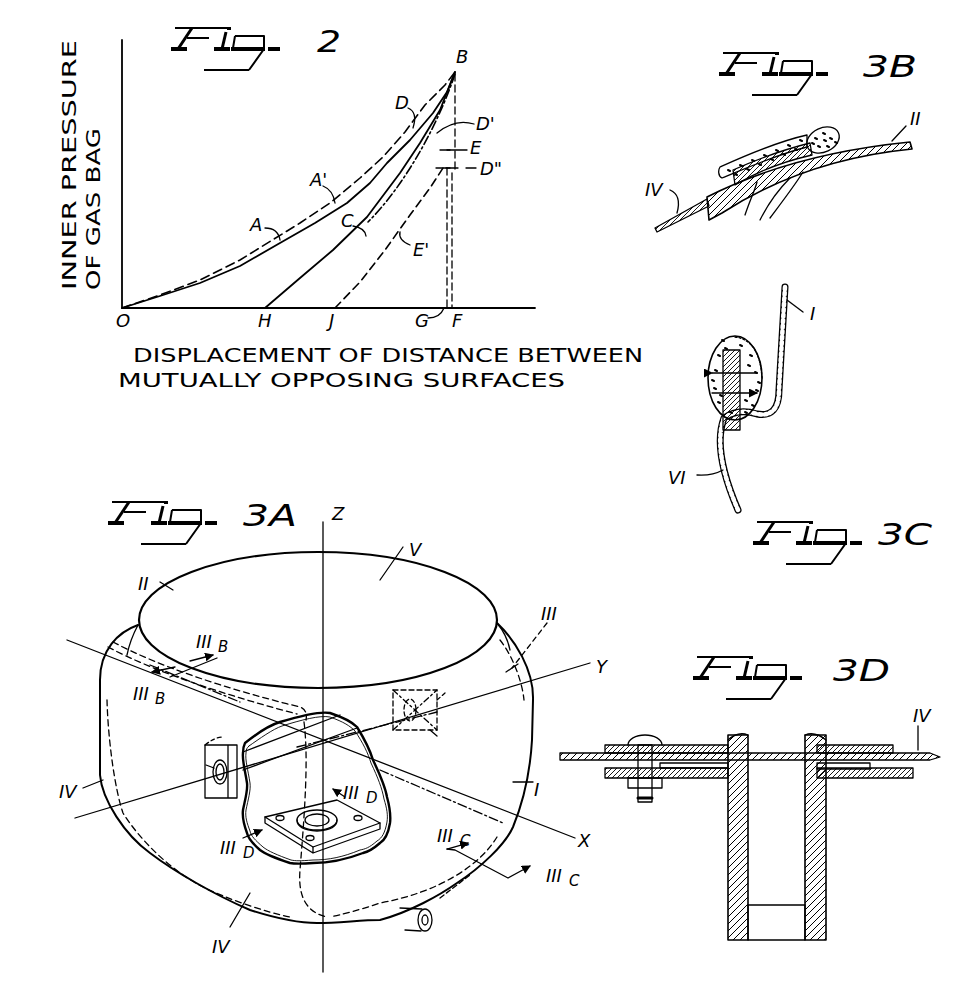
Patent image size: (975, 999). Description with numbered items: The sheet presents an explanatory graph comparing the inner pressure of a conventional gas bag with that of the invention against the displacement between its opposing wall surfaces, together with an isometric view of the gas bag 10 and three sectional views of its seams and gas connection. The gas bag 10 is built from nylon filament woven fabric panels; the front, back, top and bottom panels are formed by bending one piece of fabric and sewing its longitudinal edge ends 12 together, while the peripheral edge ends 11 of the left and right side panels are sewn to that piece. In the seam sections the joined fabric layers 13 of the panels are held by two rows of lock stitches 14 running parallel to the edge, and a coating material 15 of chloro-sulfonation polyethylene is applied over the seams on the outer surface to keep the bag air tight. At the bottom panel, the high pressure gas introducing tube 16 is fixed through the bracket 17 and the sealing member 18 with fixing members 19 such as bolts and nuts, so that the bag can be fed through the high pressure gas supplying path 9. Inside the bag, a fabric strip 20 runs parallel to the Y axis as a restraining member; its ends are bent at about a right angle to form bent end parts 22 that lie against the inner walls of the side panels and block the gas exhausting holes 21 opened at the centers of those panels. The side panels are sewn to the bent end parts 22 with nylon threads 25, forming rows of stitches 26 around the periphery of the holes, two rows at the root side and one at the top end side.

In FIG. 3A, the high pressure gas supplying path 9 is at (413, 923).
In FIG. 3D, the high pressure gas supplying path 9 is at (727, 913).
In FIG. 3A, the gas bag 10 is at (222, 575).
In FIG. 3A, the peripheral edge ends 11 is at (243, 681).
In FIG. 3B, the peripheral edge ends 11 is at (842, 160).
In FIG. 3A, the edge ends 12 is at (467, 886).
In FIG. 3C, the edge ends 12 is at (740, 435).
In FIG. 3B, the reinforcing fabric layer 13 is at (810, 133).
In FIG. 3C, the reinforcing fabric layer 13 is at (733, 342).
In FIG. 3B, the lock stitches 14 is at (753, 200).
In FIG. 3C, the lock stitches 14 is at (713, 400).
In FIG. 3B, the coating material 15 is at (825, 133).
In FIG. 3C, the coating material 15 is at (743, 342).
In FIG. 3A, the high pressure gas introducing tube 16 is at (347, 833).
In FIG. 3D, the high pressure gas introducing tube 16 is at (767, 747).
In FIG. 3D, the bracket 17 is at (688, 747).
In FIG. 3D, the sealing member 18 is at (607, 770).
In FIG. 3D, the fixing members 19 is at (645, 738).
In FIG. 3A, the strip 20 is at (284, 733).
In FIG. 3A, the gas exhausting holes 21 is at (237, 805).
In FIG. 3A, the bent end parts 22 is at (223, 745).
In FIG. 3A, the nylon threads 25 is at (207, 800).
In FIG. 3A, the rows of stitches 26 is at (203, 767).